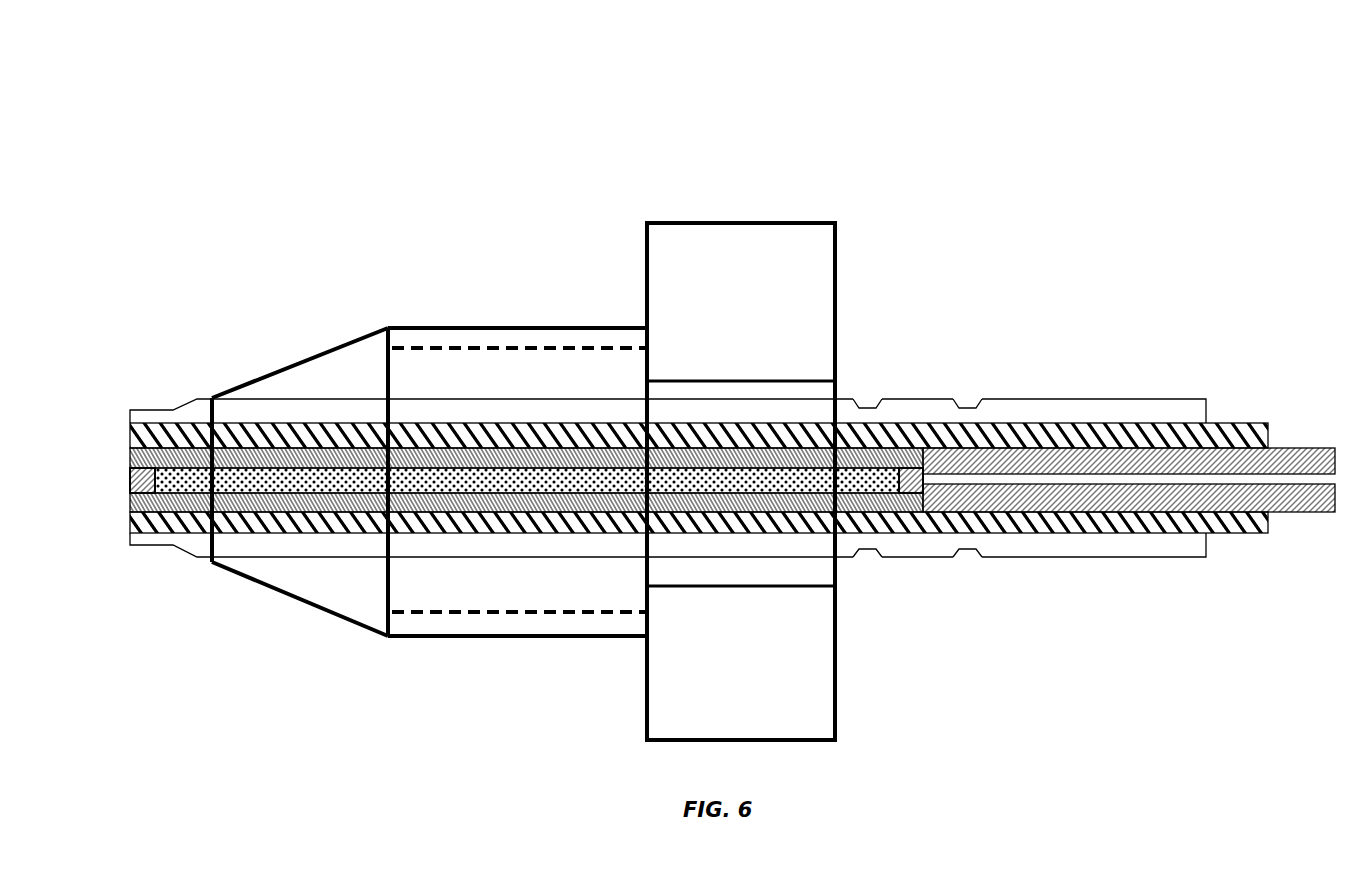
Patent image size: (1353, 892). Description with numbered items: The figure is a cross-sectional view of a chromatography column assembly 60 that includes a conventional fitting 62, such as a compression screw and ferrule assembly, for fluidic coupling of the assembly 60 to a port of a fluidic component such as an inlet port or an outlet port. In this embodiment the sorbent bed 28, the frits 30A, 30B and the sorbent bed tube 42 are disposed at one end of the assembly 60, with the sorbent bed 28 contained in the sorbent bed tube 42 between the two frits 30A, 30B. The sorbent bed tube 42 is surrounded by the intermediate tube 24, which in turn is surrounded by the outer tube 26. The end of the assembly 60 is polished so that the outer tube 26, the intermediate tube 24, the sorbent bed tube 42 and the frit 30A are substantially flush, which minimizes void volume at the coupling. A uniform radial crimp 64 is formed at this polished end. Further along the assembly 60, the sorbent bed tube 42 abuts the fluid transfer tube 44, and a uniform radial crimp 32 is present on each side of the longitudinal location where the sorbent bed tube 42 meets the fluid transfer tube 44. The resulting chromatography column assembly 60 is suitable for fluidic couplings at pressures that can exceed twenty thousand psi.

The chromatography column assembly 60 is at (1024, 134).
The fitting 62 is at (647, 223).
The uniform radial crimp 64 is at (160, 391).
The intermediate tube 24 is at (1245, 423).
The outer tube 26 is at (1068, 398).
The uniform radial crimp 32 is at (872, 391).
The sorbent bed tube 42 is at (572, 508).
The sorbent bed 28 is at (441, 480).
The frit 30A is at (130, 481).
The frit 30B is at (912, 488).
The fluid transfer tube 44 is at (1305, 512).